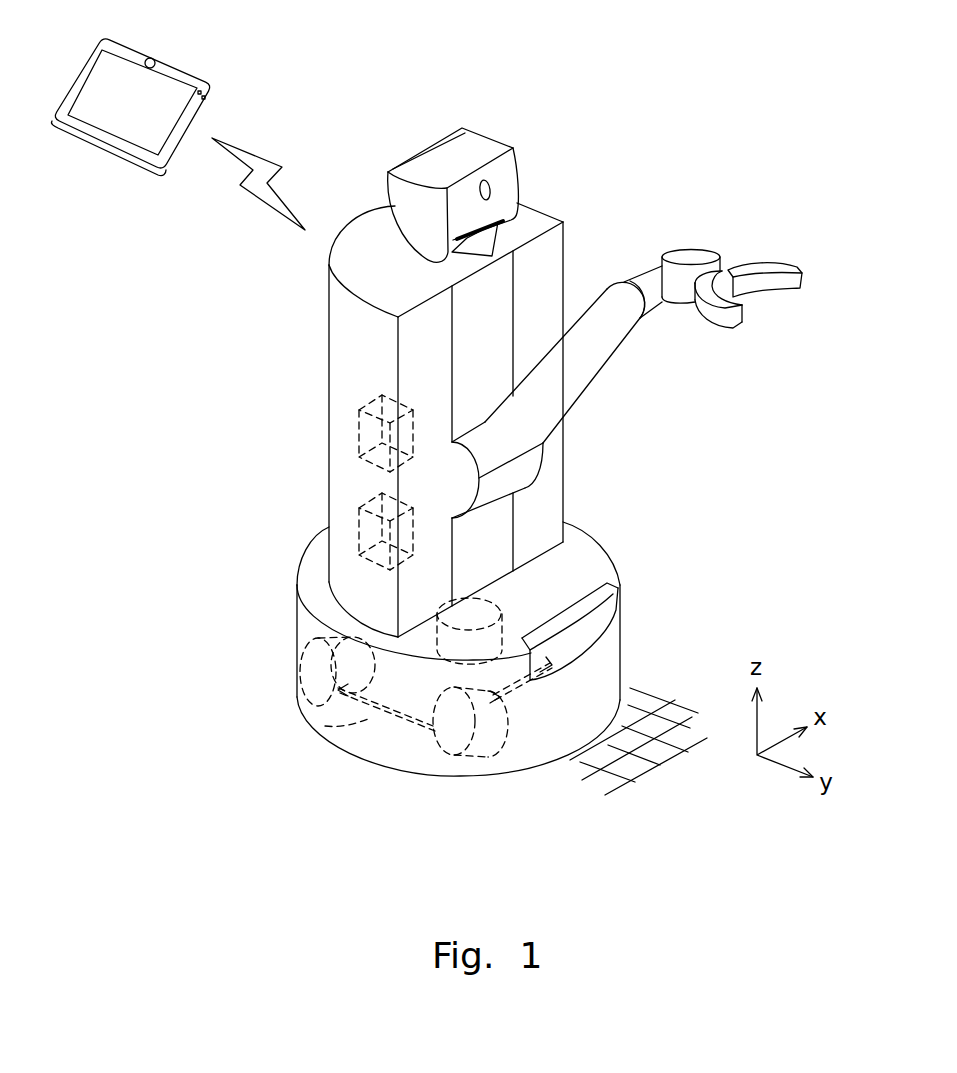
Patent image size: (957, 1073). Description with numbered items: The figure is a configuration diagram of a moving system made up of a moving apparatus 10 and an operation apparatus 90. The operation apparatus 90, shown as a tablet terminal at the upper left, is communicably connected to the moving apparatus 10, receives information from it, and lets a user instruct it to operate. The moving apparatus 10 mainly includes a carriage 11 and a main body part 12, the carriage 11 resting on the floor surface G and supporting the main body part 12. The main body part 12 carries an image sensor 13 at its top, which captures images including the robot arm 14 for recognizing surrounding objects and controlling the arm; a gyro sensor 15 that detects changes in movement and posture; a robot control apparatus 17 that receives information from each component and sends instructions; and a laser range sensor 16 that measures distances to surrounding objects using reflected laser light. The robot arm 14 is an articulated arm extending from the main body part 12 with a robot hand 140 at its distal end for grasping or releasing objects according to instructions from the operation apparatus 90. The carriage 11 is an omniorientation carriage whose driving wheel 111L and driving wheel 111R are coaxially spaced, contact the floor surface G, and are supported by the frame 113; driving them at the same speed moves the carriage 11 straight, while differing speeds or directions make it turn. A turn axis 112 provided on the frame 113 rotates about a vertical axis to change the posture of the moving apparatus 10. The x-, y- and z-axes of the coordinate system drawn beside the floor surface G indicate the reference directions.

The moving apparatus 10 is at (420, 110).
The operation apparatus 90 is at (133, 47).
The image sensor 13 is at (490, 183).
The main body part 12 is at (328, 373).
The gyro sensor 15 is at (360, 450).
The robot control apparatus 17 is at (360, 520).
The robot arm 14 is at (593, 379).
The robot hand 140 is at (770, 263).
The carriage 11 is at (297, 610).
The turn axis 112 is at (503, 617).
The laser range sensor 16 is at (593, 637).
The driving wheel 111L is at (297, 666).
The driving wheel 111R is at (520, 768).
The frame 113 is at (310, 730).
The floor surface G is at (657, 707).